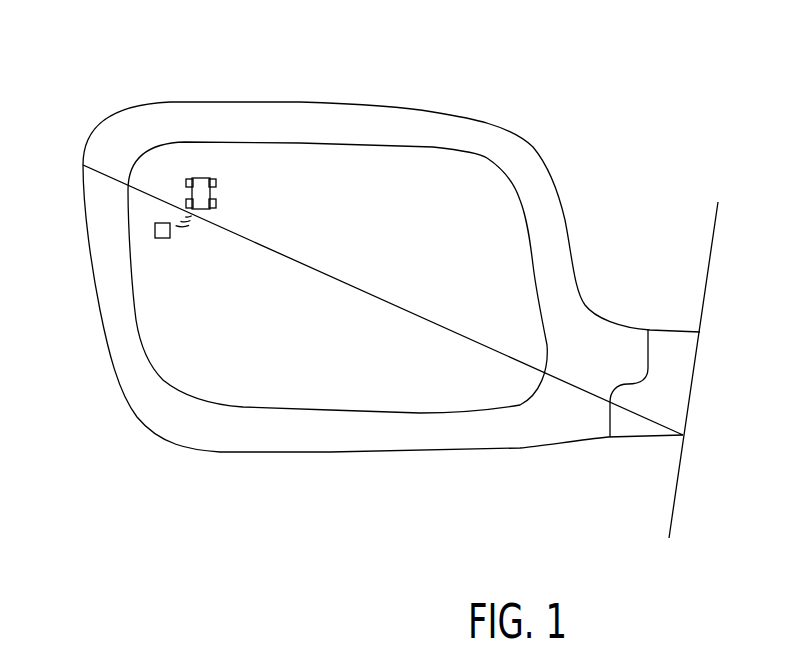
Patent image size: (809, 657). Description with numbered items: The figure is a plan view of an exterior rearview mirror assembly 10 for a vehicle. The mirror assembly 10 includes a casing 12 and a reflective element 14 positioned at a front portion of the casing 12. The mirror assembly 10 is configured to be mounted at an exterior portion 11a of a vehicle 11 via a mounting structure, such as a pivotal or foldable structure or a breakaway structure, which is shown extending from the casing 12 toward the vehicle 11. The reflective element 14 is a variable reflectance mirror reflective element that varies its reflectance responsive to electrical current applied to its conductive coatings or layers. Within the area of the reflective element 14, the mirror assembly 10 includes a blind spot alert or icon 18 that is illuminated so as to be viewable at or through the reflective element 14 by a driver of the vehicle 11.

The exterior rearview mirror assembly 10 is at (373, 266).
The vehicle 11 is at (694, 370).
The exterior portion of a vehicle 11a is at (670, 508).
The casing 12 is at (405, 365).
The reflective element 14 is at (257, 445).
The blind spot alert or icon 18 is at (206, 278).